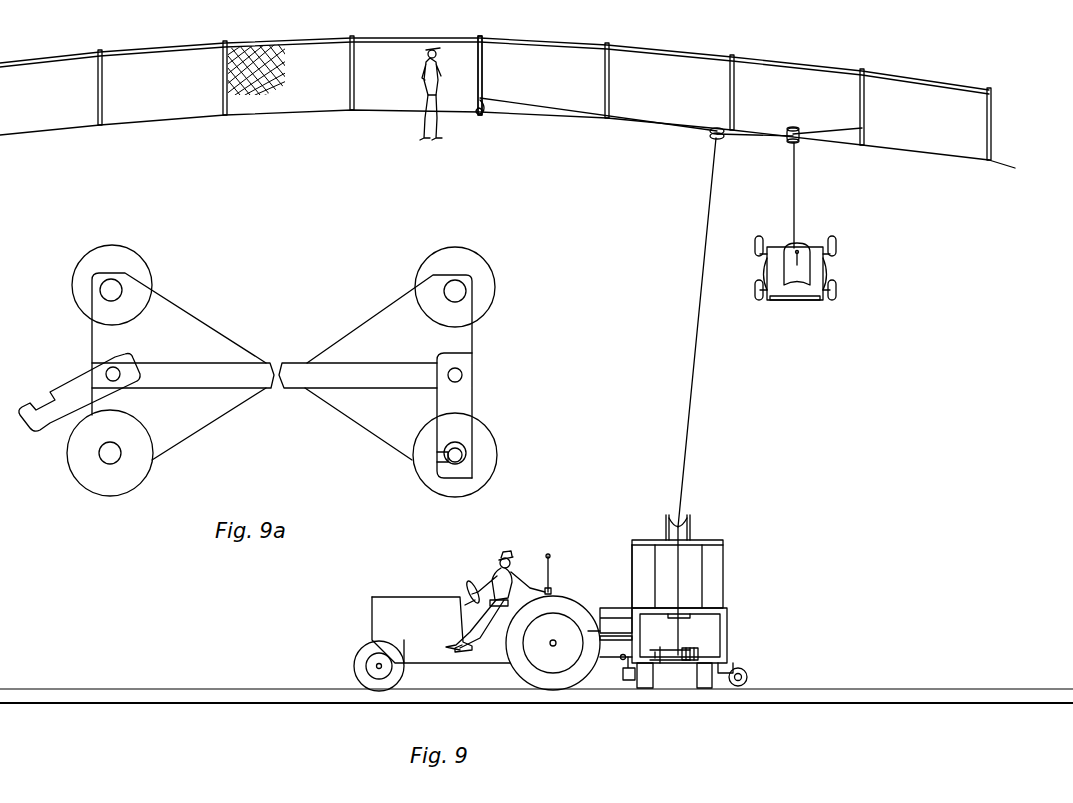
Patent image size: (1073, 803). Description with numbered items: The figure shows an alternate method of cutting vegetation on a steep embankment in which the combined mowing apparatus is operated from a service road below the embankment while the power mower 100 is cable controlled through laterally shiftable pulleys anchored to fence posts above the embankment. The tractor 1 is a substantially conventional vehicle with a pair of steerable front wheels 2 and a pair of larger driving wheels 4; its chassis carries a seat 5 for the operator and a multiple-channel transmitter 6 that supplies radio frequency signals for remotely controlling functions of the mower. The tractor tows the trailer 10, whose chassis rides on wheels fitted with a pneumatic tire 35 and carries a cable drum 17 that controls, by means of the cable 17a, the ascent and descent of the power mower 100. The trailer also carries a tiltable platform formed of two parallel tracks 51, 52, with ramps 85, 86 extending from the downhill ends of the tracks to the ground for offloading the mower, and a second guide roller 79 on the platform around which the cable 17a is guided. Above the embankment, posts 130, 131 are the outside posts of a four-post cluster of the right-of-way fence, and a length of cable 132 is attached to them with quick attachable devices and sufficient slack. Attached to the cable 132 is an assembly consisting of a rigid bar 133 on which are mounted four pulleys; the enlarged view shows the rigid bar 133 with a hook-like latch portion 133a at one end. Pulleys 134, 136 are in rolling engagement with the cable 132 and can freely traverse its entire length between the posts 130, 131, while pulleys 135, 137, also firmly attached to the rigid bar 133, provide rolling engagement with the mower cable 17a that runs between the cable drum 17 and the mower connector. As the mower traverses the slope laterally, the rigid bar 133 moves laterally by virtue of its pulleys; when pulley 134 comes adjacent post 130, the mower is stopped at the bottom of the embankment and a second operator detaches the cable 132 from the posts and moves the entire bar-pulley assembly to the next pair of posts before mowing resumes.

In FIG. 9, the tractor 1 is at (408, 560).
In FIG. 9, the front wheels 2 is at (354, 661).
In FIG. 9, the driving wheels 4 is at (512, 672).
In FIG. 9, the seat 5 is at (527, 598).
In FIG. 9, the multiple-channel transmitter 6 is at (552, 591).
In FIG. 9, the trailer 10 is at (734, 609).
In FIG. 9, the cable drum 17 is at (688, 654).
In FIG. 9, the cable 17a is at (695, 390).
In FIG. 9, the pneumatic tire 35 is at (748, 674).
In FIG. 9, the track 51 is at (632, 572).
In FIG. 9, the track 52 is at (724, 561).
In FIG. 9, the second guide roller 79 is at (682, 526).
In FIG. 9, the ramp 85 is at (696, 685).
In FIG. 9, the ramp 86 is at (657, 685).
In FIG. 9, the power mower 100 is at (832, 269).
In FIG. 9, the post 130 is at (483, 72).
In FIG. 9, the post 131 is at (864, 110).
In FIG. 9, the cable 132 is at (607, 115).
In FIG. 9A, the rigid bar 133 is at (268, 355).
In FIG. 9A, the latch handle 133a is at (27, 402).
In FIG. 9A, the pulley 134 is at (124, 246).
In FIG. 9A, the pulley 135 is at (118, 497).
In FIG. 9A, the pulley 136 is at (482, 260).
In FIG. 9A, the pulley 137 is at (484, 488).